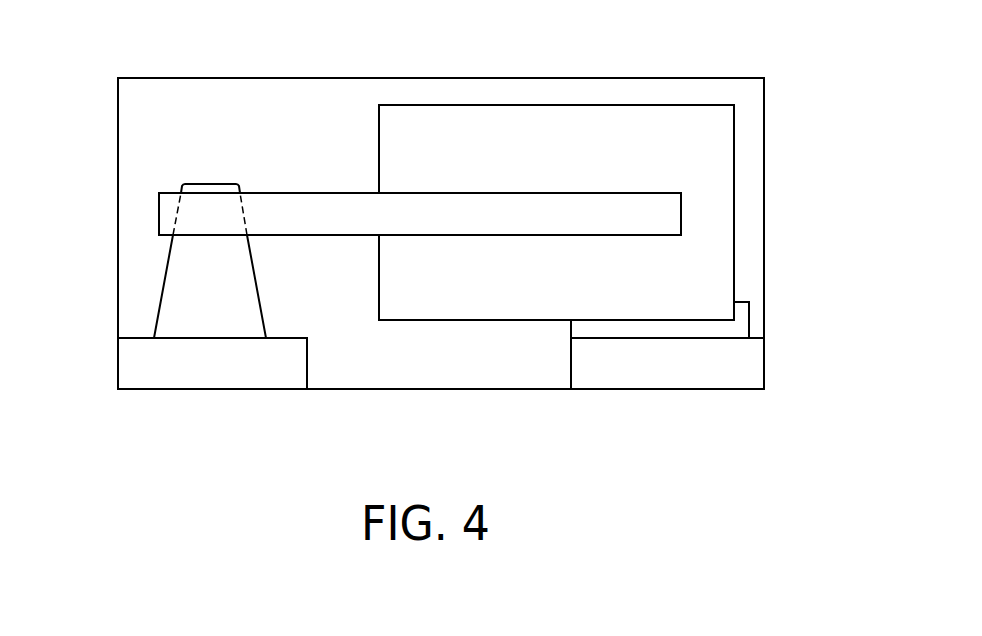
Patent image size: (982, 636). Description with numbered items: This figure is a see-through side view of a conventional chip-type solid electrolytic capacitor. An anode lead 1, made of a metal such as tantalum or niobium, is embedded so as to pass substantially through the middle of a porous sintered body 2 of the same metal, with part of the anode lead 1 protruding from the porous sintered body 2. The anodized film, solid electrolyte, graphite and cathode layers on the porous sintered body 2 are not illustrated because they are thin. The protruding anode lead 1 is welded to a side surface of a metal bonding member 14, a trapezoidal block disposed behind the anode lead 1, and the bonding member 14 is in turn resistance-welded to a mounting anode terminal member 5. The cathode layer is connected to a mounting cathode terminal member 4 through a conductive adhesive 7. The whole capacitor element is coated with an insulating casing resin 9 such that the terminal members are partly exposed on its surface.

The anode lead 1 is at (592, 202).
The porous sintered body 2 is at (725, 205).
The mounting cathode terminal member 4 is at (743, 380).
The mounting anode terminal member 5 is at (127, 377).
The conductive adhesive 7 is at (741, 322).
The insulating casing resin 9 is at (750, 112).
The metal bonding member 14 is at (179, 306).